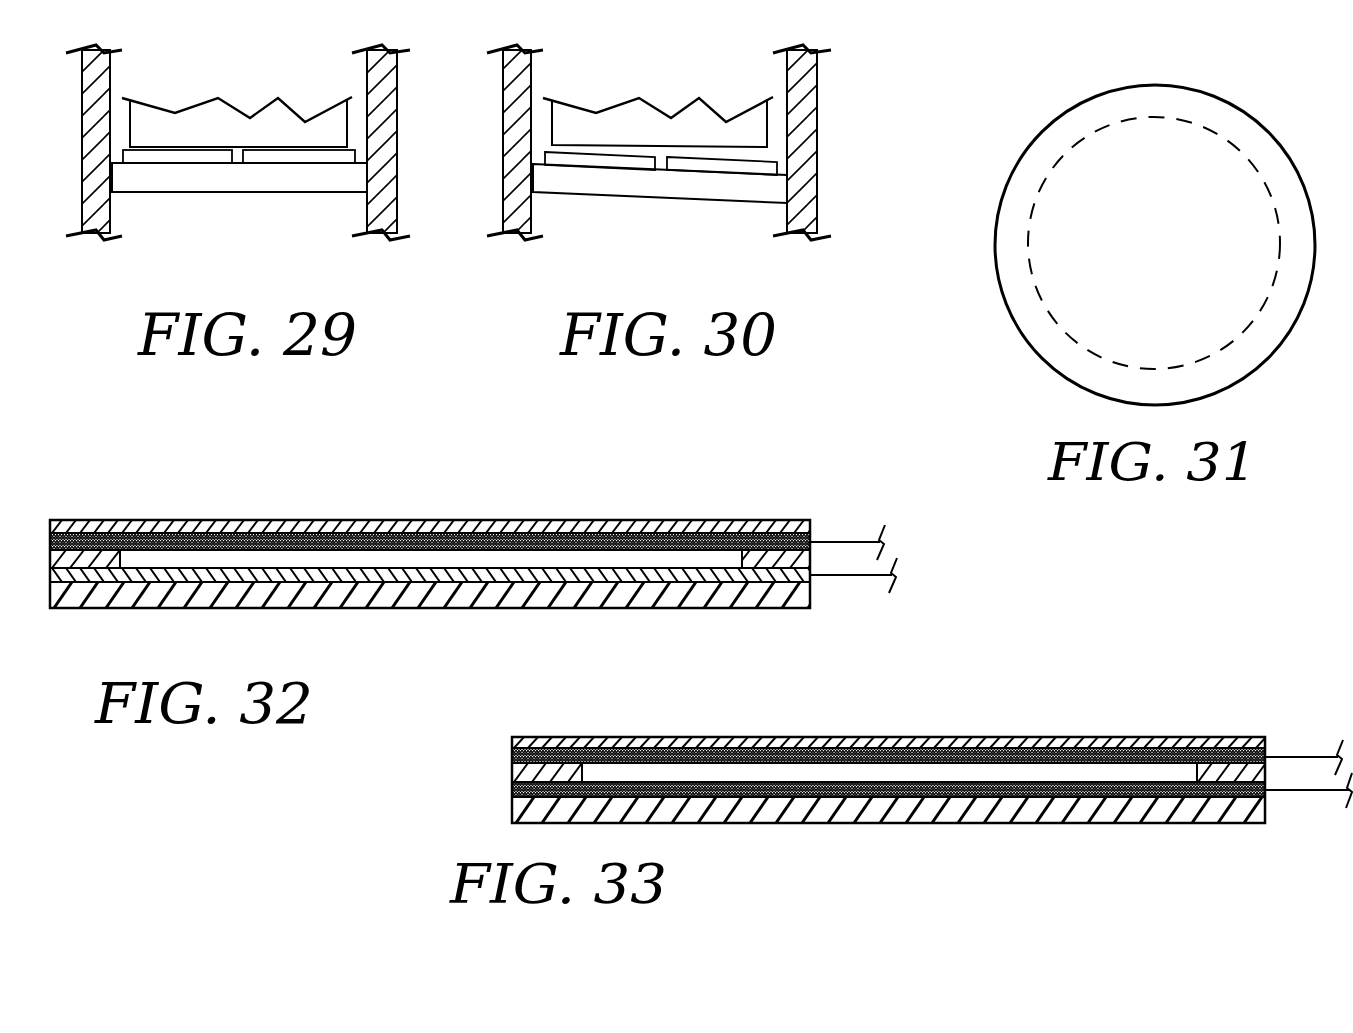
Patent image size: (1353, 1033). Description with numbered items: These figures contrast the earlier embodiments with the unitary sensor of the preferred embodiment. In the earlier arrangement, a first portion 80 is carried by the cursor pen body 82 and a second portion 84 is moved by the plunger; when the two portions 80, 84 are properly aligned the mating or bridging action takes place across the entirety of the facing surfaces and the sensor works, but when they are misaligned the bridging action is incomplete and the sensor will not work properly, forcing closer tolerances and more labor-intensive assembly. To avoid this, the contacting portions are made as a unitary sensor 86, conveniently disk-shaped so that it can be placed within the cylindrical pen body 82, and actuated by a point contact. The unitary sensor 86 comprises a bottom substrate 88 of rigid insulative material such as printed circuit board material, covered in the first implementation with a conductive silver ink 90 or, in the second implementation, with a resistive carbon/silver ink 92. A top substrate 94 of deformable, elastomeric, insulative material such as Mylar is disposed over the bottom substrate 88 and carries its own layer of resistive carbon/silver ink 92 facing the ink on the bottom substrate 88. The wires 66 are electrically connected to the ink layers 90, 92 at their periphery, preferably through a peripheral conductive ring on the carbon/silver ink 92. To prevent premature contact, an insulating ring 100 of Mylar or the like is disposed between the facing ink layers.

In FIG. 32, the wires 66 is at (857, 575).
In FIG. 33, the wires 66 is at (1313, 790).
In FIG. 29, the first portion 80 is at (230, 207).
In FIG. 30, the first portion 80 is at (651, 207).
In FIG. 29, the cursor pen body 82 is at (102, 78).
In FIG. 30, the cursor pen body 82 is at (523, 78).
In FIG. 29, the second portion 84 is at (232, 90).
In FIG. 30, the second portion 84 is at (653, 90).
In FIG. 31, the unitary sensor 86 is at (1116, 222).
In FIG. 32, the unitary sensor 86 is at (430, 547).
In FIG. 33, the unitary sensor 86 is at (888, 760).
In FIG. 32, the bottom substrate 88 is at (515, 608).
In FIG. 33, the bottom substrate 88 is at (973, 823).
In FIG. 32, the conductive silver ink 90 is at (383, 575).
In FIG. 32, the resistive carbon/silver ink 92 is at (390, 530).
In FIG. 33, the resistive carbon/silver ink 92 is at (850, 748).
In FIG. 31, the top substrate 94 is at (1061, 295).
In FIG. 32, the top substrate 94 is at (513, 532).
In FIG. 33, the top substrate 94 is at (973, 745).
In FIG. 31, the insulating ring 100 is at (1028, 178).
In FIG. 32, the insulating ring 100 is at (132, 532).
In FIG. 33, the insulating ring 100 is at (593, 737).